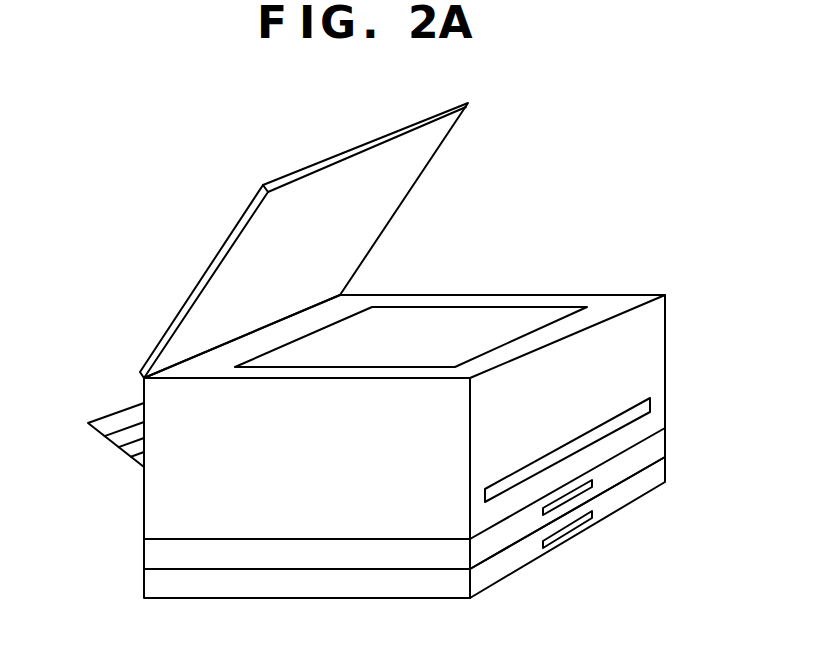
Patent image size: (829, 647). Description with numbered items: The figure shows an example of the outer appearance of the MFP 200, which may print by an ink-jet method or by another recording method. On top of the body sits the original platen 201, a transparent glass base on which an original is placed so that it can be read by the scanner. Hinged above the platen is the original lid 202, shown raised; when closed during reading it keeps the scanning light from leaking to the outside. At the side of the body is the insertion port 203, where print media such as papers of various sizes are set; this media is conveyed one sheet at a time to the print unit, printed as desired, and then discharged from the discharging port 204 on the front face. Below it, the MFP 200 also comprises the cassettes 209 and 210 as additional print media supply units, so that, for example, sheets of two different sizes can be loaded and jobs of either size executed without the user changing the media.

The MFP 200 is at (152, 487).
The original platen 201 is at (497, 315).
The original lid 202 is at (217, 265).
The insertion port 203 is at (103, 436).
The discharging port 204 is at (650, 401).
The cassette 209 is at (152, 551).
The cassette 210 is at (152, 585).